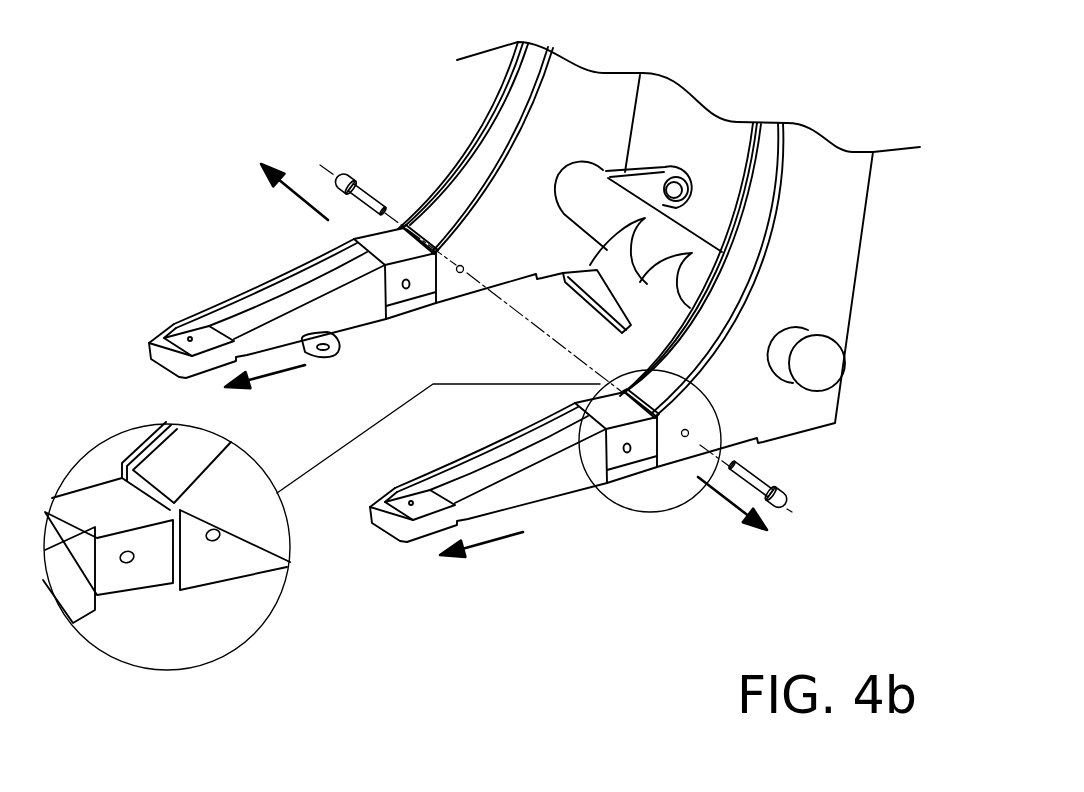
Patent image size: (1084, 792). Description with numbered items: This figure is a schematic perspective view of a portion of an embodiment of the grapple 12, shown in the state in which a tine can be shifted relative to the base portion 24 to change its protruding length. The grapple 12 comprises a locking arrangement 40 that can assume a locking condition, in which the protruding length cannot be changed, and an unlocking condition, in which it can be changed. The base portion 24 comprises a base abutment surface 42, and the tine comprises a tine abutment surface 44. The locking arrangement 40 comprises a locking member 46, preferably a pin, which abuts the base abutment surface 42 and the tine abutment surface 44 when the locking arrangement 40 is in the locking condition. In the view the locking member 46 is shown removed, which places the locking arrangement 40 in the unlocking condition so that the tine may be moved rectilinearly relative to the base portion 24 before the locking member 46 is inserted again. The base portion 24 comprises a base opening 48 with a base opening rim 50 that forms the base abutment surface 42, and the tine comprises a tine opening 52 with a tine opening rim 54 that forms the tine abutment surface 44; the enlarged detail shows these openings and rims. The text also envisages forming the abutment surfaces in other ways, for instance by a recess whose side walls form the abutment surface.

The grapple 12 is at (350, 82).
The base portion 24 is at (885, 444).
The locking arrangement 40 is at (614, 577).
The base abutment surface 42 is at (728, 424).
The tine abutment surface 44 is at (627, 489).
The locking member 46 is at (791, 495).
The base opening 48 is at (218, 541).
The base opening rim 50 is at (222, 540).
The tine opening 52 is at (129, 562).
The tine opening rim 54 is at (137, 561).